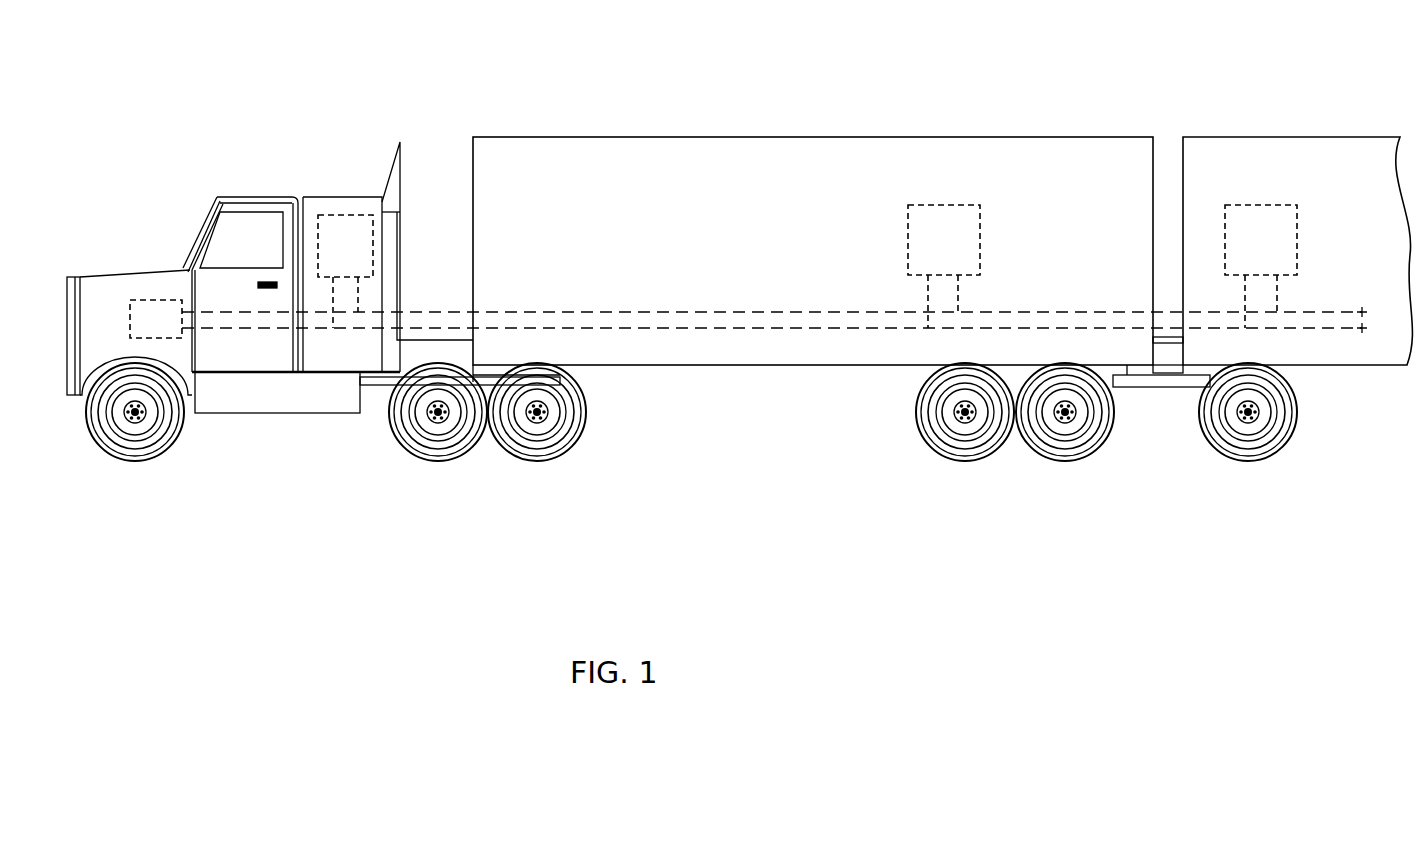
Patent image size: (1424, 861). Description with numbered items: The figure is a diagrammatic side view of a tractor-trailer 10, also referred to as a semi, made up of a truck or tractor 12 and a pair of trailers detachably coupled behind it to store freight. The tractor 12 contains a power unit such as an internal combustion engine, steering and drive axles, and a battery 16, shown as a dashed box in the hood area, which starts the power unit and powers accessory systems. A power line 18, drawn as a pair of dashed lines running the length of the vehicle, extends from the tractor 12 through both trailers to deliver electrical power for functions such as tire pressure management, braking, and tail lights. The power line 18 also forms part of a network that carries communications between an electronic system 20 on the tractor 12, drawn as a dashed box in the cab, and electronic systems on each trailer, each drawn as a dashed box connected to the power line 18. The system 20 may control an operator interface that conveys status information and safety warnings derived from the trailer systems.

The tractor-trailer 10 is at (192, 162).
The tractor 12 is at (97, 292).
The battery 16 is at (151, 310).
The power line 18 is at (692, 312).
The electronic system 20 is at (338, 215).